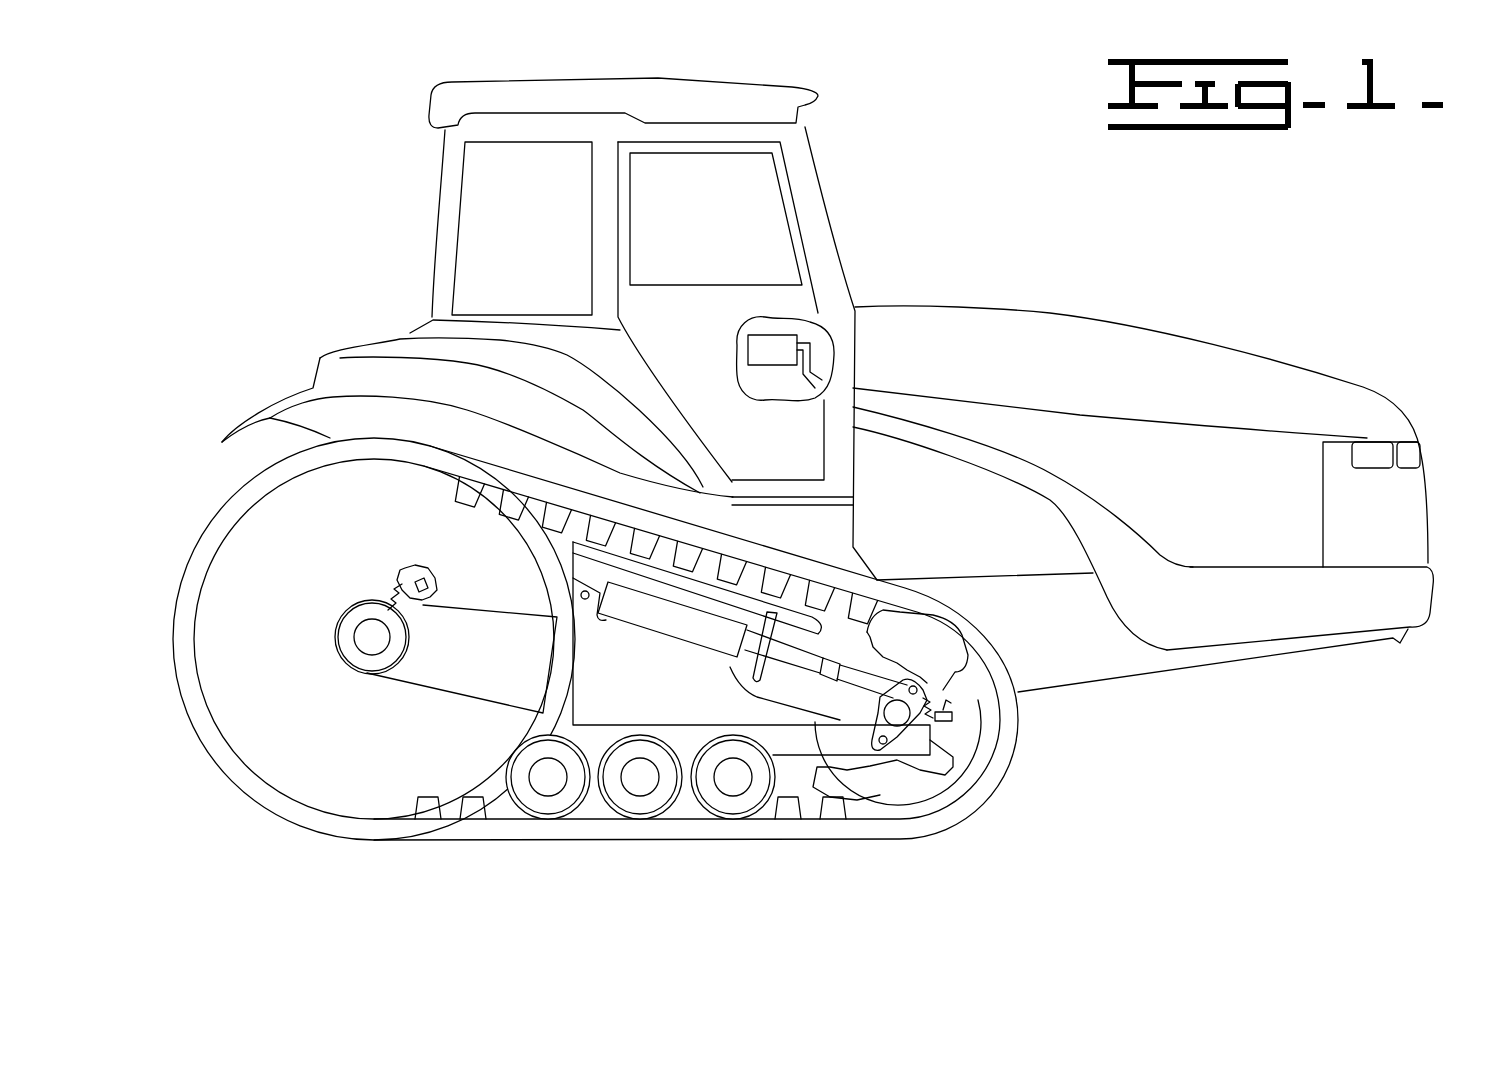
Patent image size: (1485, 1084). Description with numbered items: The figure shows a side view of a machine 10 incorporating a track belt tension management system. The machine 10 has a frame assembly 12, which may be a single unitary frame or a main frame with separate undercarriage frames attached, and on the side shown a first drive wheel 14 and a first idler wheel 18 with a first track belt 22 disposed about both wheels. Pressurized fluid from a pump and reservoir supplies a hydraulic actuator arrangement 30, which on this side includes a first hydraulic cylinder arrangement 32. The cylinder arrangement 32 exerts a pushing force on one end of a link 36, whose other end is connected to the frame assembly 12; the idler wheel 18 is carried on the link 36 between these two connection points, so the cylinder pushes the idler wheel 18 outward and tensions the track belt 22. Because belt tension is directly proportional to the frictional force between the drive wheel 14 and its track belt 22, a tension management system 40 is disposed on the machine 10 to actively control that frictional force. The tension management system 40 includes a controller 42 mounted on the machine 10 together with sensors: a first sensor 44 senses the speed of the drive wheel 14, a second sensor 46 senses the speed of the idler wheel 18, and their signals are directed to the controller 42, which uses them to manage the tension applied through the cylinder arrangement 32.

The machine 10 is at (377, 233).
The frame assembly 12 is at (617, 684).
The first drive wheel 14 is at (280, 531).
The first idler wheel 18 is at (950, 777).
The first track belt 22 is at (523, 835).
The hydraulic actuator arrangement 30 is at (773, 685).
The first hydraulic cylinder arrangement 32 is at (712, 640).
The link 36 is at (925, 695).
The tension management system 40 is at (957, 346).
The controller 42 is at (748, 342).
The first sensor 44 is at (400, 590).
The second sensor 46 is at (962, 717).